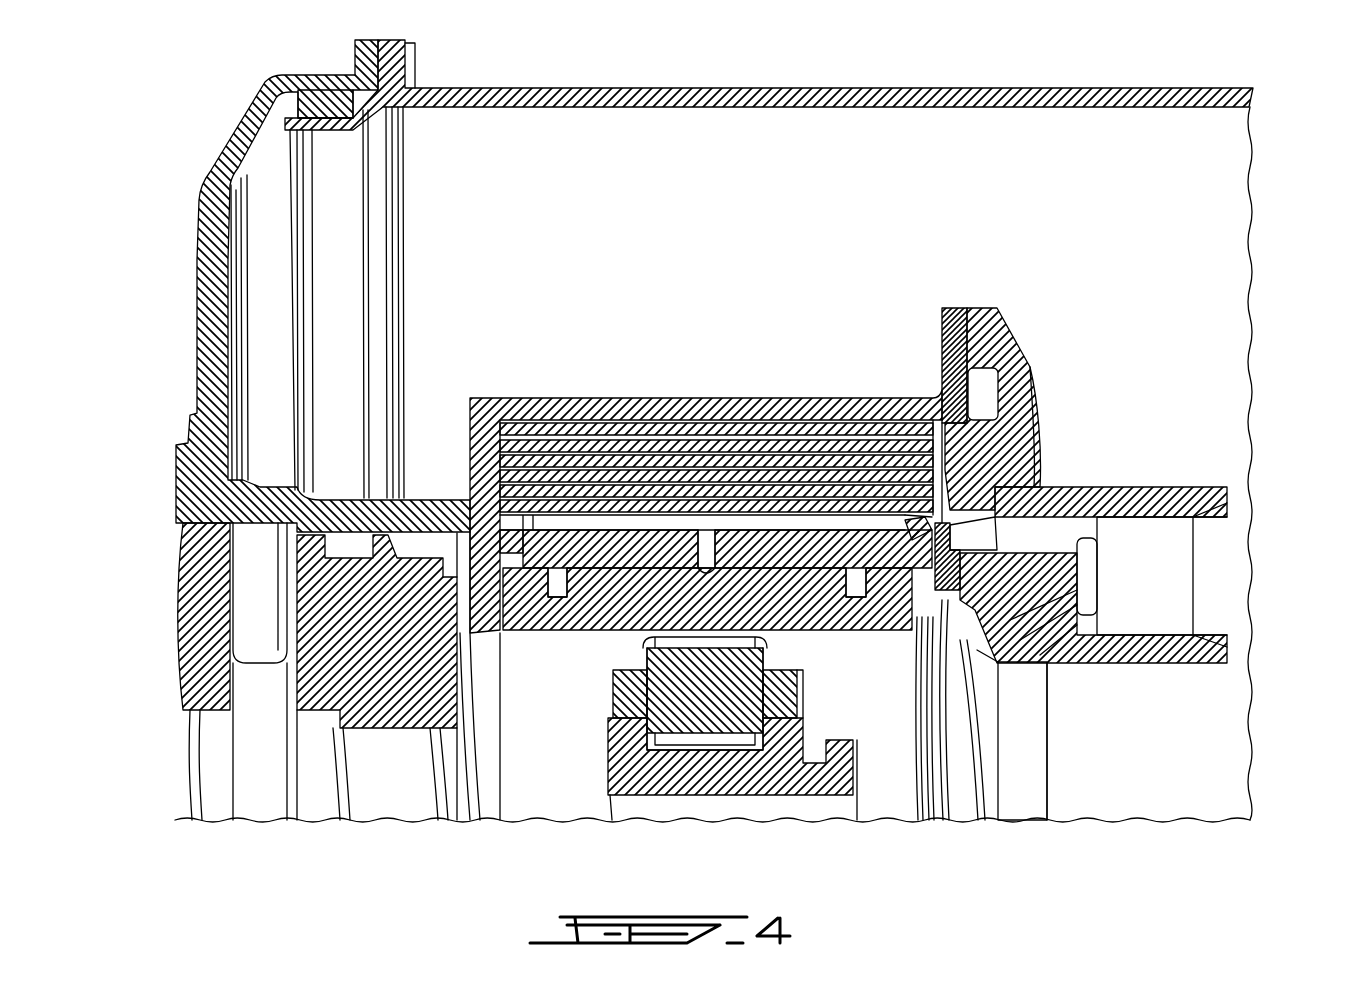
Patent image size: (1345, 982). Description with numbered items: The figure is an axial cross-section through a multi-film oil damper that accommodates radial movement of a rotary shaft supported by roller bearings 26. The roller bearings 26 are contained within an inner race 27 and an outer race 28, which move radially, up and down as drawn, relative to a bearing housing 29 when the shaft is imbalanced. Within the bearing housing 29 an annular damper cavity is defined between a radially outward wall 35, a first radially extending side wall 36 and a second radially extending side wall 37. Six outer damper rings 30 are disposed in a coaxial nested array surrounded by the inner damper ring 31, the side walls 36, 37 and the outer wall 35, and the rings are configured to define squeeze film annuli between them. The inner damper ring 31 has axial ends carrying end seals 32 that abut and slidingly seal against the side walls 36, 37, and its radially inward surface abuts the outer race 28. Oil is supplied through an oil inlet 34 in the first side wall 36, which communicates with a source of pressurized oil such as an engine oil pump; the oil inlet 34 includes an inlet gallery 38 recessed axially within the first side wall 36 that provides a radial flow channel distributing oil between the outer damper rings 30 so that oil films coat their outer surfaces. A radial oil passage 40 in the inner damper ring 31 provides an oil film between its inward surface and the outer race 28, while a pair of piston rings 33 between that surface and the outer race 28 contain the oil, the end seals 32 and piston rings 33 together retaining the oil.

The roller bearings 26 is at (703, 697).
The inner race 27 is at (738, 772).
The outer race 28 is at (600, 633).
The bearing housing 29 is at (528, 332).
The outer damper rings 30 is at (500, 453).
The inner damper ring 31 is at (783, 553).
The axial end seals 32 is at (505, 553).
The piston rings 33 is at (553, 598).
The oil inlet 34 is at (1150, 567).
The radially outward wall 35 is at (560, 398).
The first radially extending side wall 36 is at (935, 605).
The second radially extending side wall 37 is at (470, 425).
The inlet gallery 38 is at (997, 457).
The radial oil passage 40 is at (705, 540).